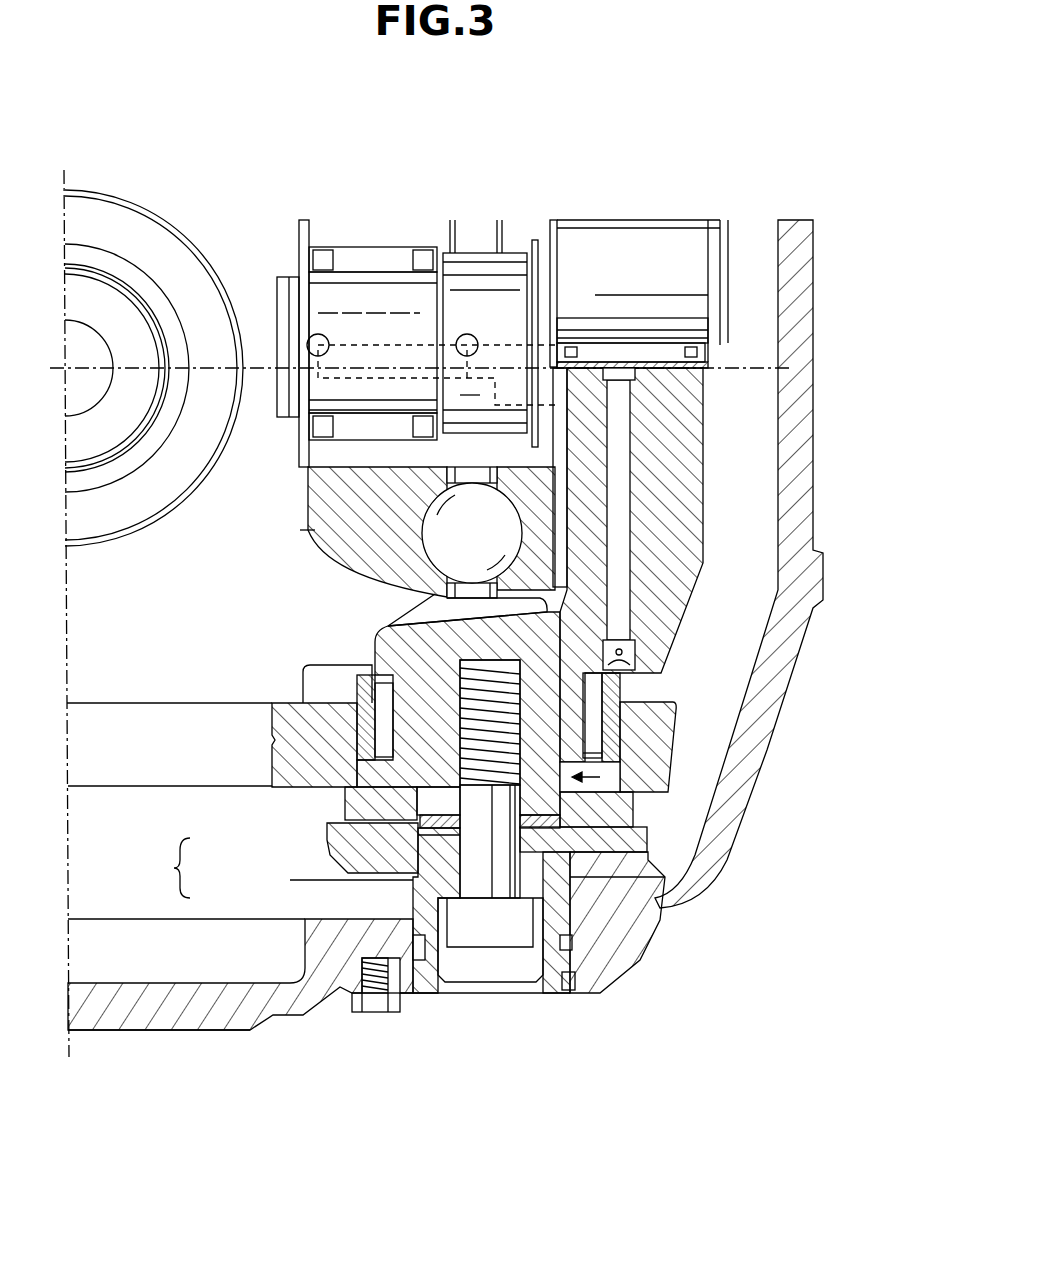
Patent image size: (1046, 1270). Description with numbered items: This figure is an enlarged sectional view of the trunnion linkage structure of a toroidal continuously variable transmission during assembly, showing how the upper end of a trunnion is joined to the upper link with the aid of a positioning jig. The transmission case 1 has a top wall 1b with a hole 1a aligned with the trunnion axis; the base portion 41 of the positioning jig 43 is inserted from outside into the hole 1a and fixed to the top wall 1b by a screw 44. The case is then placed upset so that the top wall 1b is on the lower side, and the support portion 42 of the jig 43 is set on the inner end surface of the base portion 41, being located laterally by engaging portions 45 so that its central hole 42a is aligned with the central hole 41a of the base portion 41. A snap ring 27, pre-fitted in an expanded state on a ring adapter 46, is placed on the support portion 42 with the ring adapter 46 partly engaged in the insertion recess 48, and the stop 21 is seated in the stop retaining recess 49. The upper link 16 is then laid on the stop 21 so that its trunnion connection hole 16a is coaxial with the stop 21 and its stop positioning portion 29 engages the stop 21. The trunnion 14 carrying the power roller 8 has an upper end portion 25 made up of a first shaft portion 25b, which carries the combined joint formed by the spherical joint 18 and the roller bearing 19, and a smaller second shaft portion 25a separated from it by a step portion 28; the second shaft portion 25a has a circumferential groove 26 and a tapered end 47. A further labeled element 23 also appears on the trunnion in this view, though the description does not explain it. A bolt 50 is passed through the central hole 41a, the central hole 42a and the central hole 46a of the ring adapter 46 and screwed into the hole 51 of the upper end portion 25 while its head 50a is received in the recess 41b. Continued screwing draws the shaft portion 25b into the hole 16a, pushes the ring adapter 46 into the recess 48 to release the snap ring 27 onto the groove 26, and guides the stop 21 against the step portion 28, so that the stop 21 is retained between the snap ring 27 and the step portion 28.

The transmission case 1 is at (176, 1040).
The hole 1a is at (570, 975).
The top wall 1b is at (232, 1032).
The power roller 8 is at (308, 530).
The trunnion 14 is at (663, 627).
The upper link 16 is at (637, 787).
The trunnion connection hole 16a is at (625, 790).
The spherical joint 18 is at (660, 752).
The roller bearing 19 is at (610, 705).
The stop 21 is at (630, 852).
The pin 23 is at (650, 663).
The upper end portion 25 is at (640, 815).
The second shaft portion 25a is at (630, 840).
The first shaft portion 25b is at (650, 733).
The circumferential groove 26 is at (640, 880).
The snap ring 27 is at (620, 880).
The step portion 28 is at (340, 745).
The stop positioning portion 29 is at (384, 720).
The base portion 41 is at (412, 930).
The central hole 41a is at (445, 888).
The recess 41b is at (527, 994).
The support portion 42 is at (340, 848).
The central hole 42a is at (440, 858).
The positioning jig 43 is at (165, 868).
The screw 44 is at (377, 1013).
The engaging portions 45 is at (600, 925).
The ring adapter 46 is at (610, 895).
The central hole 46a is at (365, 730).
The tapered end 47 is at (630, 868).
The insertion recess 48 is at (590, 930).
The stop retaining recess 49 is at (355, 805).
The bolt 50 is at (472, 945).
The head 50a is at (503, 950).
The hole 51 is at (463, 687).